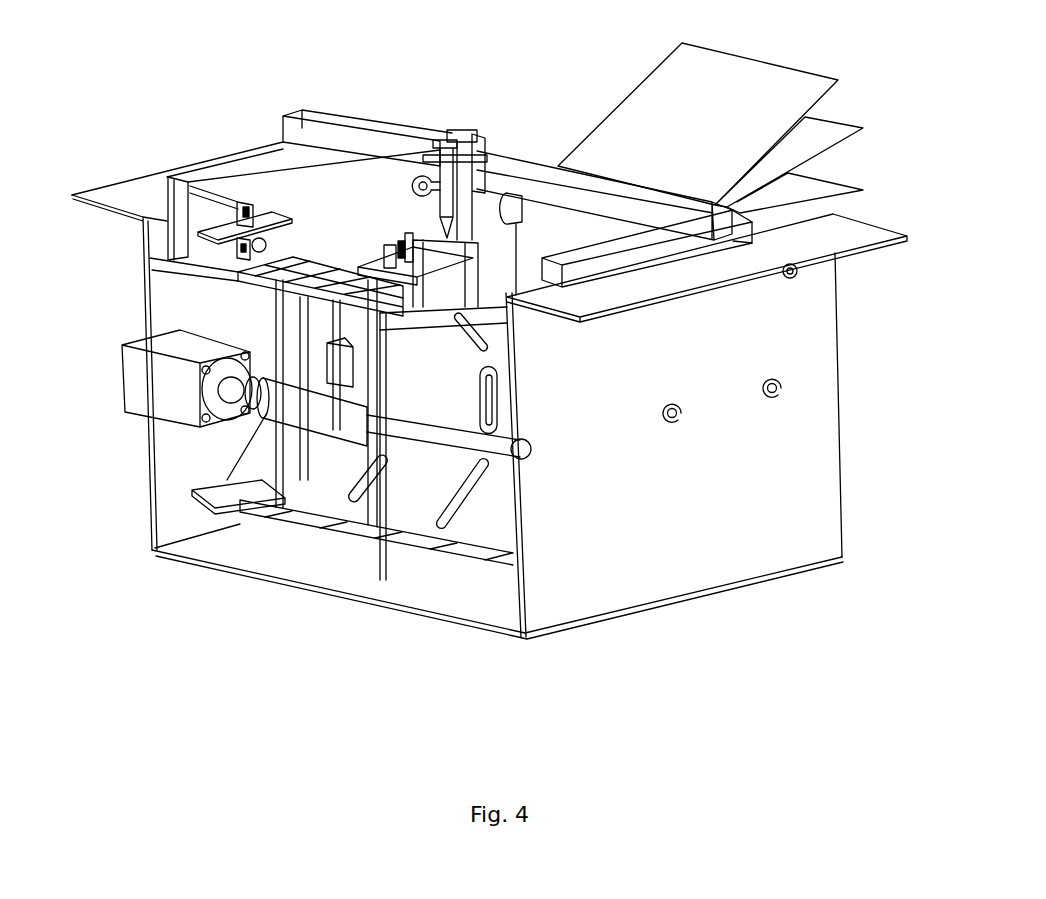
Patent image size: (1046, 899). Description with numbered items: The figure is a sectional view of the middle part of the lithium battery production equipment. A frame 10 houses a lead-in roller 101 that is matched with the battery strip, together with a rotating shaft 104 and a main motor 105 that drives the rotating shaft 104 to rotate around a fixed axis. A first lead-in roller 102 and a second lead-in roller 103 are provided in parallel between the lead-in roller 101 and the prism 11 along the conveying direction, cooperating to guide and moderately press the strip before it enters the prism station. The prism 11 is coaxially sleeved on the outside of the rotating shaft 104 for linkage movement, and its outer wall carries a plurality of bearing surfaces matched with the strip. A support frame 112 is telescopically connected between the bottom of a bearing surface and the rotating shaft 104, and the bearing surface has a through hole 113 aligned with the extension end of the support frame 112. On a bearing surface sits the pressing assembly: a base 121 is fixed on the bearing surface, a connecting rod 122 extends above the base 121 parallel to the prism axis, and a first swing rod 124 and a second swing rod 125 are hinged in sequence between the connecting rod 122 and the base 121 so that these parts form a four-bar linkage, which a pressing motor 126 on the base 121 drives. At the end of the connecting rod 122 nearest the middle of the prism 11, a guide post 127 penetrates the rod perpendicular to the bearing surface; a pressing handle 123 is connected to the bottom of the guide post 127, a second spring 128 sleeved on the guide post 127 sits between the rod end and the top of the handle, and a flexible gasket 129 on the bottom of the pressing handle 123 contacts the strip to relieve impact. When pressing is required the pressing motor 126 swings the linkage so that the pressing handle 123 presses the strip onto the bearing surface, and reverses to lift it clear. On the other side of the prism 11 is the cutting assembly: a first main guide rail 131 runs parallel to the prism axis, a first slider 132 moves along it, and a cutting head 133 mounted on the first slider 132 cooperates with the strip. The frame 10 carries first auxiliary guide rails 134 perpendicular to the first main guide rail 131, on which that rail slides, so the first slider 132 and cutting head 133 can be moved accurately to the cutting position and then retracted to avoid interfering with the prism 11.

The frame 10 is at (817, 363).
The lead-in roller 101 is at (797, 278).
The first lead-in roller 102 is at (771, 390).
The second lead-in roller 103 is at (672, 415).
The rotating shaft 104 is at (358, 475).
The main motor 105 is at (173, 390).
The prism 11 is at (413, 323).
The support frame 112 is at (335, 410).
The through hole 113 is at (310, 405).
The base 121 is at (176, 250).
The connecting rod 122 is at (236, 212).
The pressing handle 123 is at (398, 260).
The first swing rod 124 is at (383, 330).
The second swing rod 125 is at (507, 337).
The pressing motor 126 is at (210, 203).
The guide post 127 is at (400, 237).
The second spring 128 is at (378, 260).
The flexible gasket 129 is at (387, 360).
The first main guide rail 131 is at (613, 198).
The first slider 132 is at (483, 155).
The cutting head 133 is at (449, 225).
The first auxiliary guide rail 134 is at (258, 178).